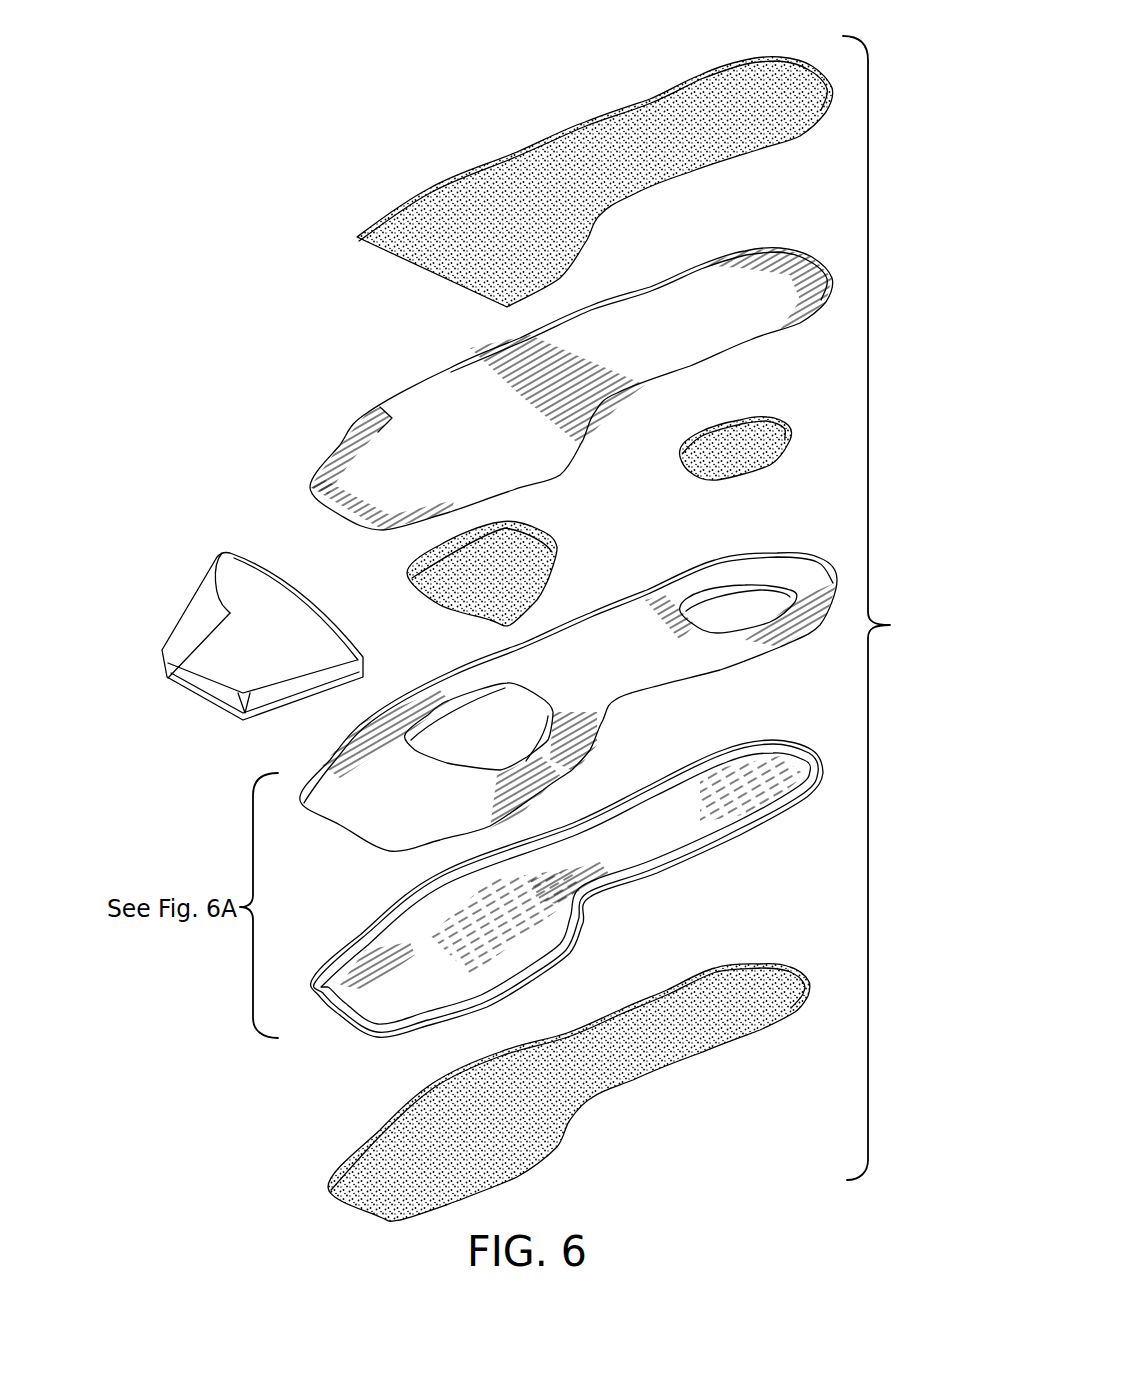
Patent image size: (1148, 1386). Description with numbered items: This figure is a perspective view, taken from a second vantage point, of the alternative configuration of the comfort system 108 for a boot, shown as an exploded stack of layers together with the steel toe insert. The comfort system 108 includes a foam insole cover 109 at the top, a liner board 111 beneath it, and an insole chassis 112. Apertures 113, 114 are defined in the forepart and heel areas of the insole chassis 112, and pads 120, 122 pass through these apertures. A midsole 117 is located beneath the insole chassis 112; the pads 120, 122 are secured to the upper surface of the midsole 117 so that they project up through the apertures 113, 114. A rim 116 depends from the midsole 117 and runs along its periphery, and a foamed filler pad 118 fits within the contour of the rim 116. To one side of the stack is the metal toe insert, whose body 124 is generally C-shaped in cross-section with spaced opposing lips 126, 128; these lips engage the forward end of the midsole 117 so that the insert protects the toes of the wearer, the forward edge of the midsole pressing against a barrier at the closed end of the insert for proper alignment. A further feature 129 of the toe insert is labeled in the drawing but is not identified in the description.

The comfort system 108 is at (280, 642).
The foam insole cover 109 is at (797, 102).
The liner board 111 is at (780, 300).
The insole chassis 112 is at (568, 667).
The aperture 113 is at (580, 763).
The aperture 114 is at (753, 617).
The rim 116 is at (540, 882).
The midsole 117 is at (738, 748).
The foamed filler pad 118 is at (762, 1016).
The pad 120 is at (767, 440).
The pad 122 is at (517, 553).
The body 124 is at (200, 583).
The lip 126 is at (230, 553).
The lip 128 is at (365, 663).
The heel cup bottom rim 129 is at (235, 737).